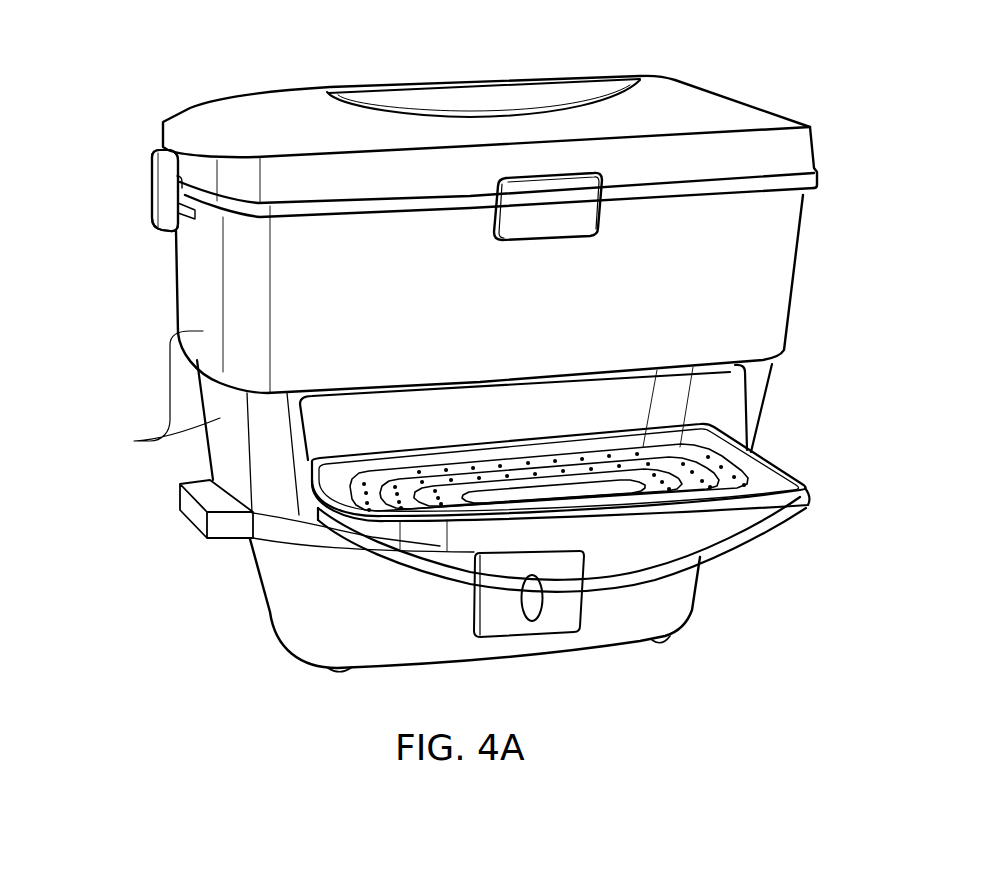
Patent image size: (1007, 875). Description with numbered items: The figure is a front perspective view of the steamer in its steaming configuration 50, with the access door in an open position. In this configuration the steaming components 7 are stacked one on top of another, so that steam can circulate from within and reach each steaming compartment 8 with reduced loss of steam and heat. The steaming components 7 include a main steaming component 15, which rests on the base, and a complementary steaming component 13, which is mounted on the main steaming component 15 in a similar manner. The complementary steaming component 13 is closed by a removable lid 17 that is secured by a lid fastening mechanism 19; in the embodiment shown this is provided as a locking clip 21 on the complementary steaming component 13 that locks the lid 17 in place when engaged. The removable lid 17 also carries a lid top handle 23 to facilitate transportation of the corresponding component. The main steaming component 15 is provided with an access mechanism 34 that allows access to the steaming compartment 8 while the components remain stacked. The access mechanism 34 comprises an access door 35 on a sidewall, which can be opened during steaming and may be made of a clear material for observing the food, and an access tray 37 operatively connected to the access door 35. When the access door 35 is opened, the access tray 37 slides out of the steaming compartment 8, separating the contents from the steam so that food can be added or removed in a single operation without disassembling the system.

The steaming configuration of the steaming system 50 is at (766, 27).
The removable lid 17 is at (230, 117).
The lid top handle 23 is at (472, 80).
The lid fastening mechanism 19 is at (160, 183).
The locking clip 21 is at (160, 183).
The complementary steaming component 13 is at (815, 291).
The main steaming component 15 is at (785, 414).
The steaming components 7 is at (409, 501).
The steaming compartment 8 is at (325, 431).
The access mechanism 34 is at (757, 553).
The access tray 37 is at (792, 505).
The access door 35 is at (667, 563).